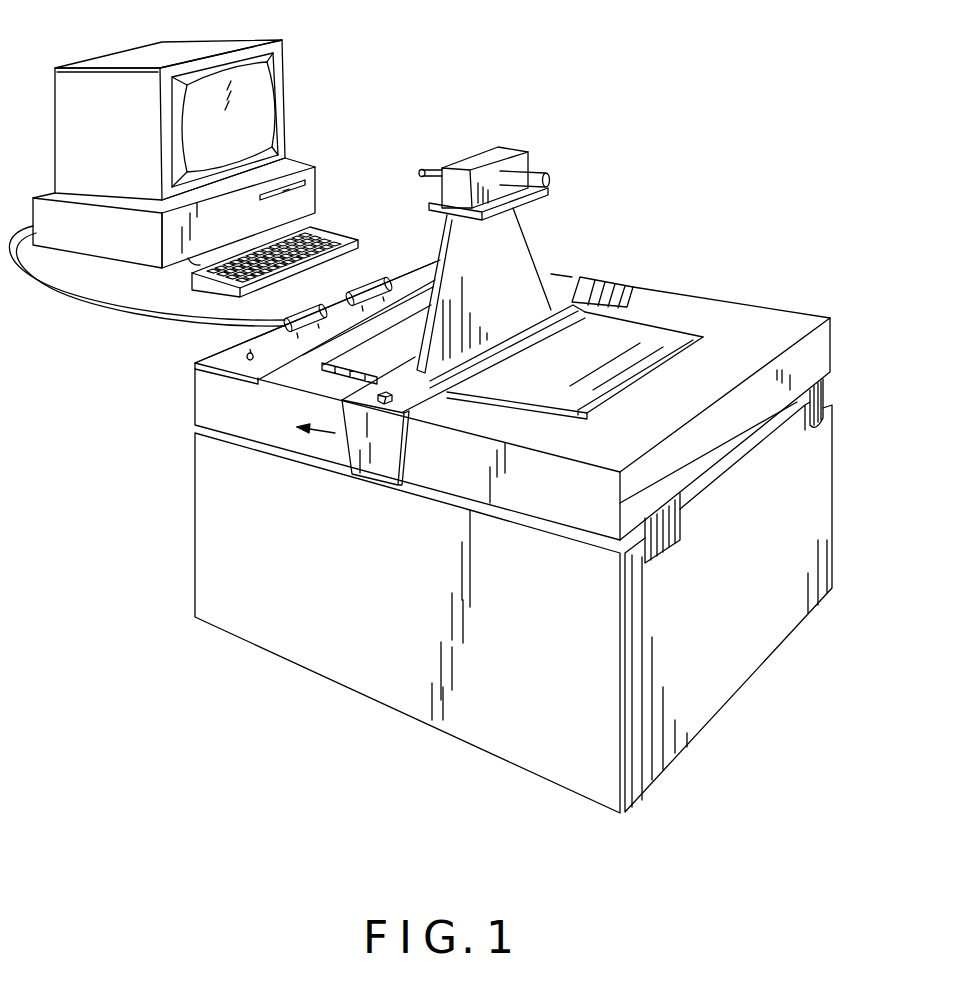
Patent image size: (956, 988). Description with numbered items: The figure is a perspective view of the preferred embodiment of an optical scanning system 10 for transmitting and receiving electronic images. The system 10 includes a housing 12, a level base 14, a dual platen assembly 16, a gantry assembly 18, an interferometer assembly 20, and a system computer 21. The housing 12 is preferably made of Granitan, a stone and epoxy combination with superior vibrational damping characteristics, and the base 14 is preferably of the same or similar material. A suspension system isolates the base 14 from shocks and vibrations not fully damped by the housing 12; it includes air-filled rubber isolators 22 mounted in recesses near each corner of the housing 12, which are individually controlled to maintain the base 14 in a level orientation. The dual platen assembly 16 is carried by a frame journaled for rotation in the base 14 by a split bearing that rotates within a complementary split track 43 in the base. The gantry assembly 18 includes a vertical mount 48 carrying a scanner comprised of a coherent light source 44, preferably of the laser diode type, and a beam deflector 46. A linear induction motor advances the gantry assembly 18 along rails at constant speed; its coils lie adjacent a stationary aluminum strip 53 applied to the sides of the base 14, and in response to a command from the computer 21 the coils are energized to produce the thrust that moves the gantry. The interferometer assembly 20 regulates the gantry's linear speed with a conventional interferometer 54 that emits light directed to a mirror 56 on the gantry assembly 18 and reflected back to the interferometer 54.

The optical scanning system 10 is at (712, 185).
The housing 12 is at (812, 468).
The level base 14 is at (510, 400).
The dual platen assembly 16 is at (637, 338).
The gantry assembly 18 is at (585, 283).
The interferometer assembly 20 is at (220, 357).
The system computer 21 is at (285, 47).
The airfilled rubber isolators 22 is at (818, 395).
The split track 43 is at (662, 372).
The coherent light source 44 is at (423, 175).
The beam deflector 46 is at (528, 178).
The vertical mount 48 is at (518, 235).
The aluminum strip 53 is at (207, 408).
The interferometer 54 is at (363, 282).
The mirror 56 is at (393, 397).